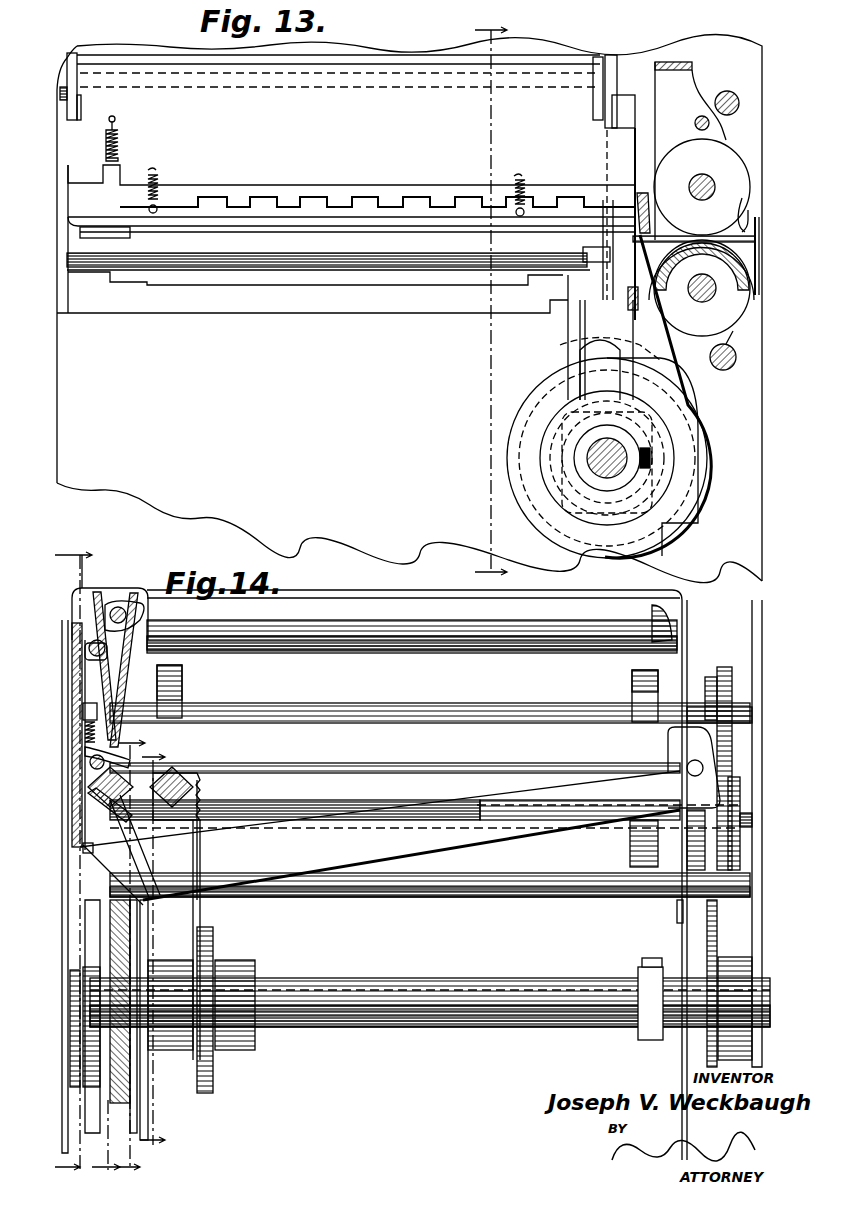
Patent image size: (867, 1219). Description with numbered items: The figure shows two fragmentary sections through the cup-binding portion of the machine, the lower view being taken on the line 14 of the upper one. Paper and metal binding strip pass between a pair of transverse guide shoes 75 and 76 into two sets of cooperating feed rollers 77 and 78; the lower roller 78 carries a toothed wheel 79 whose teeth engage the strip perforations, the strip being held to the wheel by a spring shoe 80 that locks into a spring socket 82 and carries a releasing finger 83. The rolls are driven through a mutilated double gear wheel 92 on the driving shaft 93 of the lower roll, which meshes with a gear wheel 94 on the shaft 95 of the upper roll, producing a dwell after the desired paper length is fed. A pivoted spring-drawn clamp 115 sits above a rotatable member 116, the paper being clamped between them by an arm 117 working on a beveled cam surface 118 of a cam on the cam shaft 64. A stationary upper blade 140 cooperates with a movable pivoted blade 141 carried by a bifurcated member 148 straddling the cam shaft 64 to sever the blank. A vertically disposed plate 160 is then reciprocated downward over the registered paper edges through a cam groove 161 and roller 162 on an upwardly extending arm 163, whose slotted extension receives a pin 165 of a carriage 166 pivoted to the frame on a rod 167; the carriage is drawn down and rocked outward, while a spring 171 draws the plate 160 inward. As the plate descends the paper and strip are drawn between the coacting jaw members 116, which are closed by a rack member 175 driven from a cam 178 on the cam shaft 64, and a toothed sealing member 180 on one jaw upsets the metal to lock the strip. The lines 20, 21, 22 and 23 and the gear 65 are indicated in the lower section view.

In FIG. 13, the section line 14— 14 is at (491, 299).
In FIG. 14, the section line 20- 20 is at (73, 865).
In FIG. 14, the section line 21- 21 is at (95, 856).
In FIG. 14, the section line 22- 22 is at (132, 961).
In FIG. 14, the section line 23- 23 is at (153, 952).
In FIG. 13, the cam shaft 64 is at (620, 452).
In FIG. 14, the cam shaft 64 is at (450, 1012).
In FIG. 14, the gear 65 is at (718, 940).
In FIG. 13, the upper guide shoe 75 is at (738, 200).
In FIG. 13, the lower guide shoe 76 is at (652, 242).
In FIG. 14, the feed roller 77 is at (632, 684).
In FIG. 13, the feed roller 78 is at (730, 160).
In FIG. 14, the feed roller 78 is at (182, 680).
In FIG. 13, the toothed wheel 79 is at (752, 281).
In FIG. 13, the spring shoe 80 is at (754, 262).
In FIG. 13, the spring socket 82 is at (746, 230).
In FIG. 13, the finger 83 is at (757, 222).
In FIG. 14, the double gear wheel 92 is at (736, 796).
In FIG. 13, the driving shaft 93 is at (690, 286).
In FIG. 14, the driving shaft 93 is at (745, 820).
In FIG. 14, the gear wheel 94 is at (732, 676).
In FIG. 13, the shaft 95 is at (702, 176).
In FIG. 14, the shaft 95 is at (745, 715).
In FIG. 14, the spring-drawn clamp 115 is at (90, 759).
In FIG. 14, the rotatable member 116 is at (135, 774).
In FIG. 14, the arm 117 is at (125, 862).
In FIG. 13, the beveled cam surface 118 is at (563, 400).
In FIG. 14, the beveled cam surface 118 is at (112, 1088).
In FIG. 13, the stationary upper blade 140 is at (650, 207).
In FIG. 14, the stationary upper blade 140 is at (290, 730).
In FIG. 13, the movable pivoted blade 141 is at (638, 312).
In FIG. 14, the movable pivoted blade 141 is at (440, 820).
In FIG. 13, the bifurcated member 148 is at (645, 368).
In FIG. 14, the bifurcated member 148 is at (100, 856).
In FIG. 13, the plate 160 is at (341, 108).
In FIG. 14, the plate 160 is at (118, 720).
In FIG. 14, the cam groove 161 is at (88, 905).
In FIG. 14, the roller 162 is at (85, 1073).
In FIG. 13, the arm 163 is at (606, 70).
In FIG. 14, the arm 163 is at (80, 607).
In FIG. 14, the pin 165 is at (137, 612).
In FIG. 13, the carriage 166 is at (70, 62).
In FIG. 14, the carriage 166 is at (115, 590).
In FIG. 14, the rod 167 is at (88, 650).
In FIG. 13, the spring 171 is at (121, 141).
In FIG. 13, the rack member 175 is at (556, 389).
In FIG. 14, the rack member 175 is at (200, 915).
In FIG. 13, the cam 178 is at (660, 485).
In FIG. 14, the cam 178 is at (203, 1093).
In FIG. 14, the toothed sealing member 180 is at (88, 800).